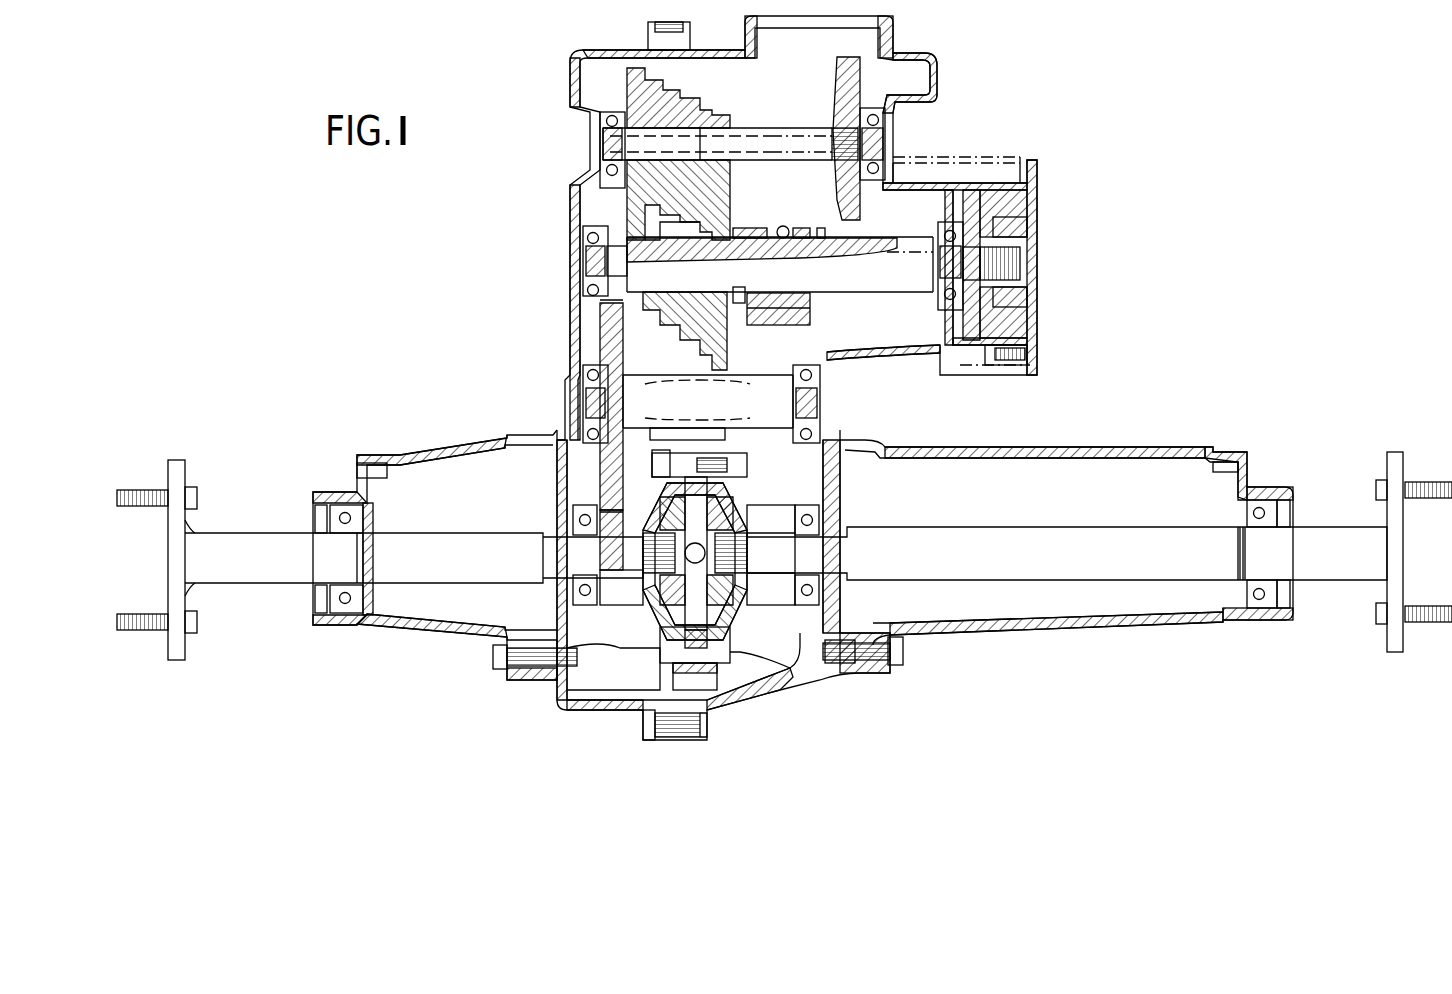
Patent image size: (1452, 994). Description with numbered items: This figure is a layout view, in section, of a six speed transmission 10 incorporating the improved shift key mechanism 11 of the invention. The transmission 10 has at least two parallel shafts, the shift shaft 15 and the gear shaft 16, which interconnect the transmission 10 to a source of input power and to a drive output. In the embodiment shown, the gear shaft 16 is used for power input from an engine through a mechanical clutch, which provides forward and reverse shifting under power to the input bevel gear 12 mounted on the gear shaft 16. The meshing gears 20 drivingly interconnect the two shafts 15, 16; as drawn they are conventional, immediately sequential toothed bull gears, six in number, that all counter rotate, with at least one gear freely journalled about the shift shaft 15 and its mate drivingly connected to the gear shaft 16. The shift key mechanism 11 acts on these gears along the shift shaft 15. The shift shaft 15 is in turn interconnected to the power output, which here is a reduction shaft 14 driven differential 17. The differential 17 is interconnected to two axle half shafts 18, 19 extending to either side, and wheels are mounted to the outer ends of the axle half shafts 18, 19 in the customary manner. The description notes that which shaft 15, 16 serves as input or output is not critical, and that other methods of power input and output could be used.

The six speed transmission 10 is at (1140, 447).
The shift key mechanism 11 is at (775, 222).
The input bevel gear 12 is at (850, 63).
The reduction shaft 14 is at (768, 380).
The shift shaft 15 is at (907, 243).
The gear shaft 16 is at (803, 135).
The differential 17 is at (747, 503).
The axle half shaft 18 is at (510, 530).
The axle half shaft 19 is at (1162, 528).
The meshing gears 20 is at (736, 186).